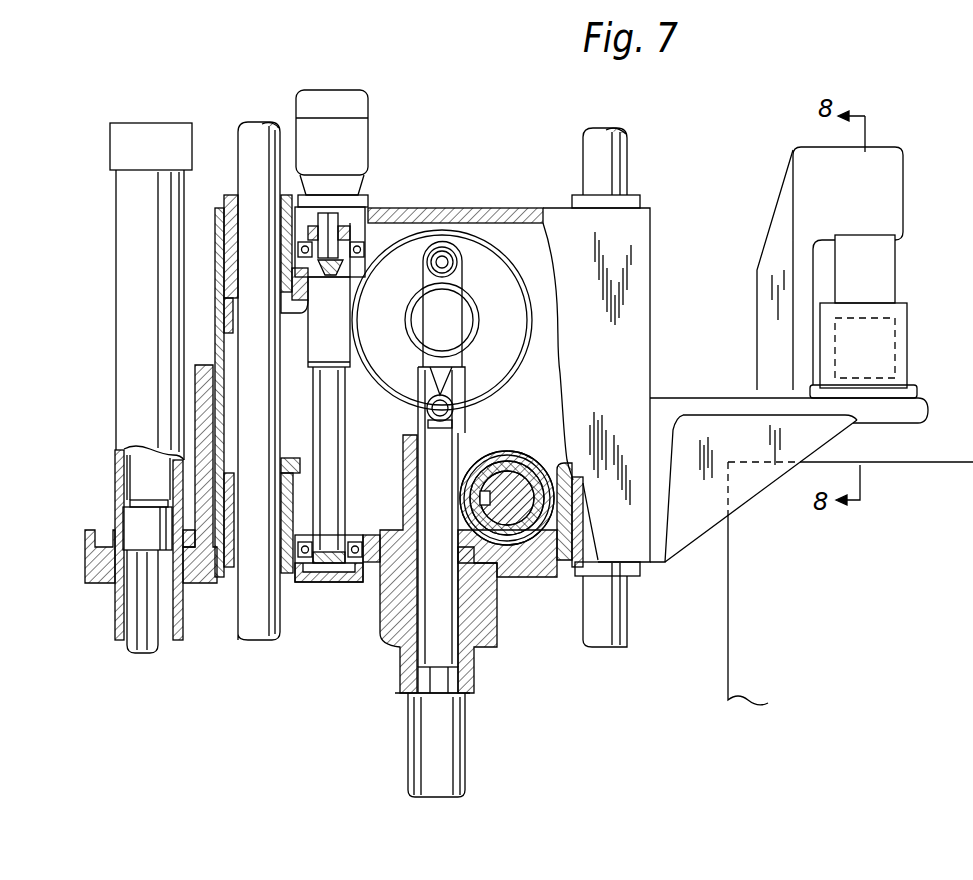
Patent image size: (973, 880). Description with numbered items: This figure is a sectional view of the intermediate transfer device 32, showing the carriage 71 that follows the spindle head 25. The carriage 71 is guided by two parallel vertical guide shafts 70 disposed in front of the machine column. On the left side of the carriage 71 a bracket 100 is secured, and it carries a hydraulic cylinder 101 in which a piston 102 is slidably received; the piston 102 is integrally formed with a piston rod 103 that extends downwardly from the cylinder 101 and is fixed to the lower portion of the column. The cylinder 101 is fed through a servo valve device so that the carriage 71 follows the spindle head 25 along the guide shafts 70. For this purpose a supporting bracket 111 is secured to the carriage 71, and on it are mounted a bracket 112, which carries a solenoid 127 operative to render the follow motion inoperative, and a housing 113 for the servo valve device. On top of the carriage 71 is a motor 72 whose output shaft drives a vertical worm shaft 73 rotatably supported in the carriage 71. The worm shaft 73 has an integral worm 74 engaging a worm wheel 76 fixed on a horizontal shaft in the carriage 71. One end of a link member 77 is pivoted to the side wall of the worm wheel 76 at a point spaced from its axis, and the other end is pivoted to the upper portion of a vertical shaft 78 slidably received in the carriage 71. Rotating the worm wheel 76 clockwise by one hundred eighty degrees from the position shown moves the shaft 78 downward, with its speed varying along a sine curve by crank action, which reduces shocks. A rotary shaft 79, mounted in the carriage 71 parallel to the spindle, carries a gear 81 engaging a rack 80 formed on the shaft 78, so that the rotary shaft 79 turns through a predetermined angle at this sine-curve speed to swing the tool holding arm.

The spindle head 25 is at (731, 612).
The intermediate transfer device 32 is at (521, 200).
The guide shafts 70 is at (615, 178).
The carriage 71 is at (483, 208).
The motor 72 is at (352, 157).
The worm shaft 73 is at (345, 440).
The worm 74 is at (280, 330).
The worm wheel 76 is at (510, 355).
The link member 77 is at (452, 313).
The vertical shaft 78 is at (423, 583).
The rotary shaft 79 is at (513, 530).
The rack 80 is at (462, 447).
The gear 81 is at (528, 468).
The bracket 100 is at (200, 540).
The hydraulic cylinder 101 is at (123, 320).
The piston 102 is at (135, 520).
The piston rod 103 is at (140, 603).
The supporting bracket 111 is at (712, 417).
The bracket 112 is at (883, 268).
The housing 113 is at (800, 250).
The solenoid 127 is at (885, 353).